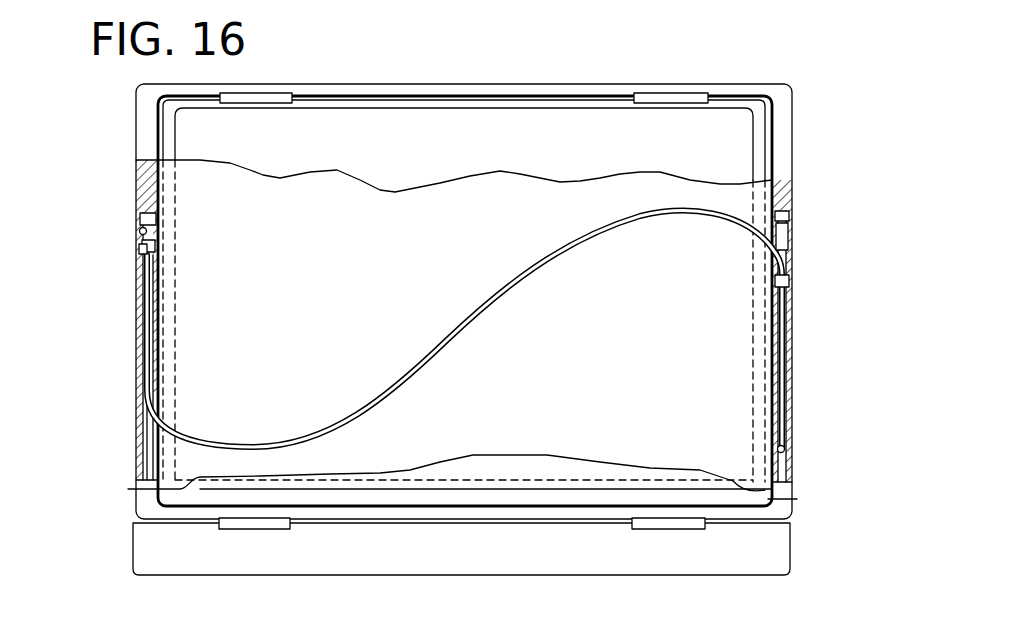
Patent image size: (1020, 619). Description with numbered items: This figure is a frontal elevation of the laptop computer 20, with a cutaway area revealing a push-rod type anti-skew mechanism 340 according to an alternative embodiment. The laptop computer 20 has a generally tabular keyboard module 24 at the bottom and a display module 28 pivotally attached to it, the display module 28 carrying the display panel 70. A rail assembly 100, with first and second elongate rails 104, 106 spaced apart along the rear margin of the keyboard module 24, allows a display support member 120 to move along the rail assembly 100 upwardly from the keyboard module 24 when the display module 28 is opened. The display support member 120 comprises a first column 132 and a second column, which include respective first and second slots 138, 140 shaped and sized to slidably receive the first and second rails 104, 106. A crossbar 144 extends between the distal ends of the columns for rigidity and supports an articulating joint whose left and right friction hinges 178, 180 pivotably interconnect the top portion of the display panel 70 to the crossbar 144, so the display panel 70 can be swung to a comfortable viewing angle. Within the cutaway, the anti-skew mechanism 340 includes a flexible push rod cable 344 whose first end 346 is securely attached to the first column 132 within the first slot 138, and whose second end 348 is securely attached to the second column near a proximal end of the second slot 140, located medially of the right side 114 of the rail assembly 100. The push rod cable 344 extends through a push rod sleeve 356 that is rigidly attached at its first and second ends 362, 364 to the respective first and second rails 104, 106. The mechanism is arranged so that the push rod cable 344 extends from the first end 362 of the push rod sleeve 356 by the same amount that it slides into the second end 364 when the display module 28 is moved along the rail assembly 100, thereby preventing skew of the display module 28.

The laptop computer 20 is at (773, 58).
The keyboard module 24 is at (808, 549).
The display module 28 is at (806, 115).
The display panel 70 is at (425, 125).
The rail assembly 100 is at (121, 489).
The first elongate rail 104 is at (143, 407).
The second elongate rail 106 is at (786, 485).
The right side 114 is at (782, 241).
The display support member 120 is at (126, 110).
The first column 132 is at (140, 183).
The first slot 138 is at (150, 218).
The second slot 140 is at (788, 216).
The crossbar 144 is at (512, 96).
The left friction hinge 178 is at (275, 93).
The right friction hinge 180 is at (660, 97).
The push-rod type anti-skew mechanism 340 is at (441, 311).
The flexible push rod cable 344 is at (152, 245).
The first end 346 is at (140, 232).
The second end 348 is at (786, 449).
The push rod sleeve 356 is at (447, 340).
The first end 362 is at (141, 248).
The second end 364 is at (786, 279).